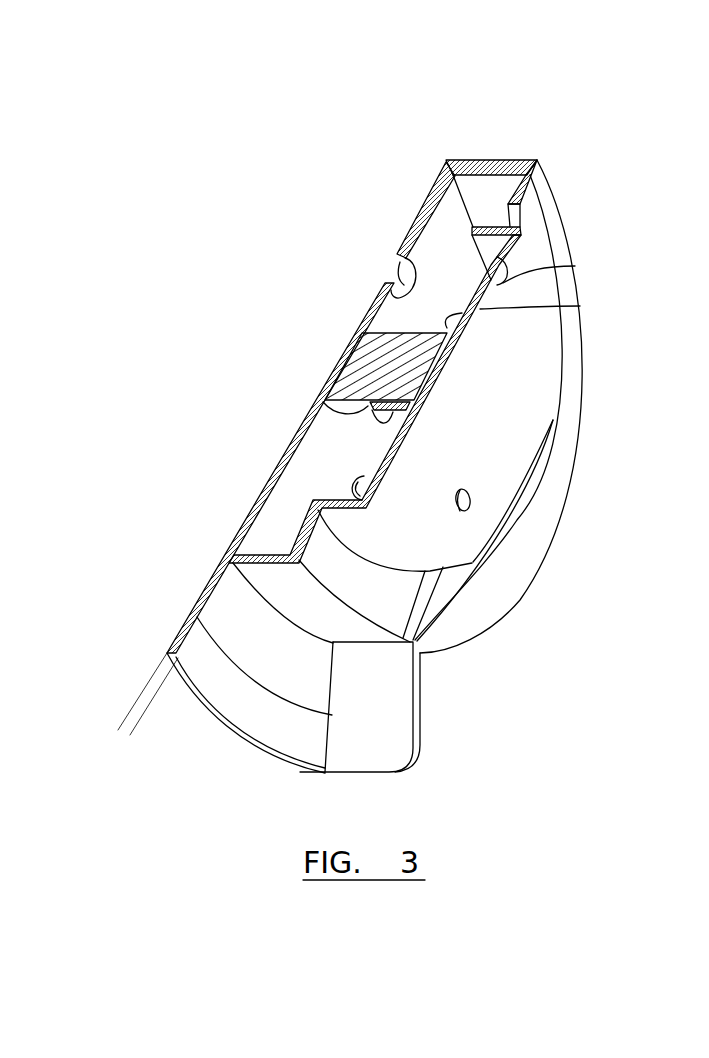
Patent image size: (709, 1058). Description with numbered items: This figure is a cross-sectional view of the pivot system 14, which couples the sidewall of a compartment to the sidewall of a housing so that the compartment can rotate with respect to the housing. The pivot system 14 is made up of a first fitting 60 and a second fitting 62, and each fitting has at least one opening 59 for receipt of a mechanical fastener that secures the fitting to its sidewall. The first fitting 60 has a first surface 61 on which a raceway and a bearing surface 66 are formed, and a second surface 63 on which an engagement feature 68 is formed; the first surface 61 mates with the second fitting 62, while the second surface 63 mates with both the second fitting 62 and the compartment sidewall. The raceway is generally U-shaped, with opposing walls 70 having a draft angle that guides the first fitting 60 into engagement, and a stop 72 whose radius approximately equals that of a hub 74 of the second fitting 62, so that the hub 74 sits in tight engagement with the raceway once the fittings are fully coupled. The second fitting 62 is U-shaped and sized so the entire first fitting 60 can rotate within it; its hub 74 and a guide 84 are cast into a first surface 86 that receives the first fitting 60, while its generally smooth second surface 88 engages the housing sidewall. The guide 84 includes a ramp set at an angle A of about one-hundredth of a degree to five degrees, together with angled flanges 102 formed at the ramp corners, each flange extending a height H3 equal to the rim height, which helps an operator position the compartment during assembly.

The pivot system 14 is at (578, 156).
The opening 59 is at (396, 273).
The first fitting 60 is at (562, 388).
The first surface 61 is at (580, 306).
The second fitting 62 is at (437, 673).
The second surface 63 is at (542, 410).
The bearing surface 66 is at (483, 243).
The engagement feature 68 is at (377, 617).
The opposing walls 70 is at (575, 266).
The stop 72 is at (377, 417).
The hub 74 is at (362, 367).
The guide 84 is at (234, 764).
The first surface 86 is at (267, 520).
The second surface 88 is at (423, 207).
The angled flanges 102 is at (383, 747).
The angle A is at (170, 728).
The height H3 is at (401, 803).